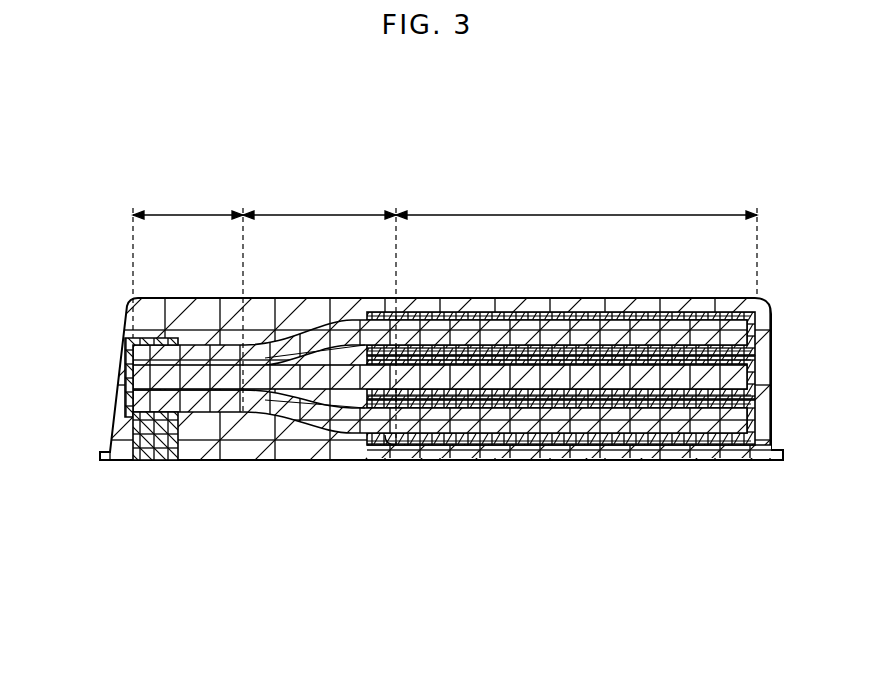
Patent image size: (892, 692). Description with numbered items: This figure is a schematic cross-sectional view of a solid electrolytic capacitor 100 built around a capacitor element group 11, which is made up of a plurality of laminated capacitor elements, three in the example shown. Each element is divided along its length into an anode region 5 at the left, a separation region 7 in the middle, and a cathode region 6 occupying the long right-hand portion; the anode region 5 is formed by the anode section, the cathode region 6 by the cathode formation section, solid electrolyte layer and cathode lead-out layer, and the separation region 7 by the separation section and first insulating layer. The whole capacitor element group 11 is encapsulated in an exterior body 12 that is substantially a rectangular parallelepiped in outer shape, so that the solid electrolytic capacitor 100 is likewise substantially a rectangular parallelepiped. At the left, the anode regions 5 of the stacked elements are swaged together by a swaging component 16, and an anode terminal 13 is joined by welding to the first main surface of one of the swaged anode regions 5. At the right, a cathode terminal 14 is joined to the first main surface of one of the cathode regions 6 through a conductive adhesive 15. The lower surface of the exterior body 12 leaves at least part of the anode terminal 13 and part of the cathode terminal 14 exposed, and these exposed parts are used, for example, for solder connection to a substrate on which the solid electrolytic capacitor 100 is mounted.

The solid electrolytic capacitor 100 is at (437, 312).
The capacitor element group 11 is at (775, 311).
The exterior body 12 is at (284, 304).
The anode terminal 13 is at (158, 462).
The cathode terminal 14 is at (447, 460).
The conductive adhesive 15 is at (387, 449).
The swaging component 16 is at (126, 363).
The anode region 5 is at (188, 302).
The cathode region 6 is at (576, 245).
The separation region 7 is at (319, 319).